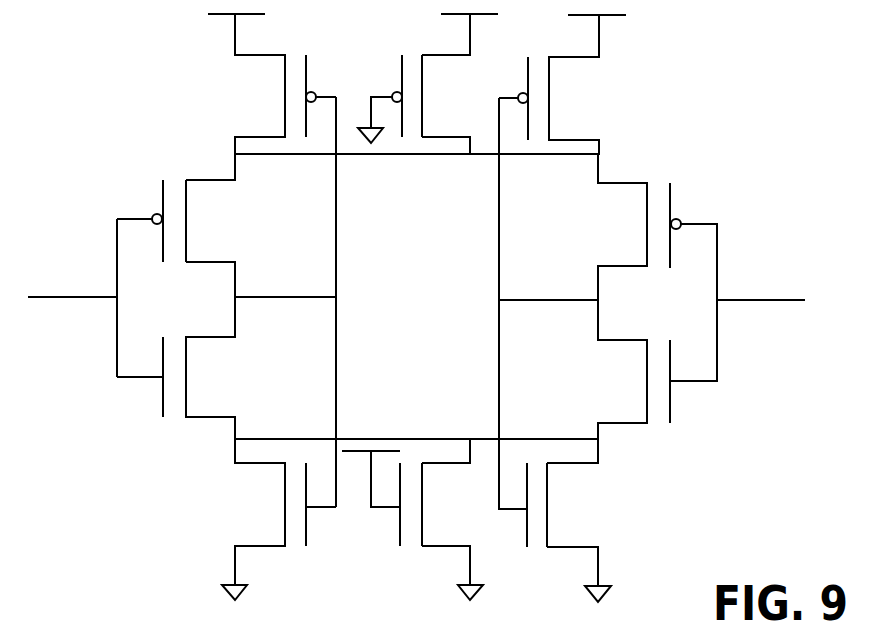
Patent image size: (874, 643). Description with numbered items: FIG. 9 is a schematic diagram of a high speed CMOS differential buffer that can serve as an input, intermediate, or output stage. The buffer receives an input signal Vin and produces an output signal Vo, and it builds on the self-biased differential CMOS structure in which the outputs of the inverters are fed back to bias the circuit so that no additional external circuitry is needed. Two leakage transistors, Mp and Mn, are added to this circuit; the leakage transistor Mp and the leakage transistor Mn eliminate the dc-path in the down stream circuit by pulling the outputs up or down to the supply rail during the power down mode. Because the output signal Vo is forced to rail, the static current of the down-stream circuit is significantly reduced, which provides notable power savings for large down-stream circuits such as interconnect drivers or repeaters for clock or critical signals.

The leakage transistor Mp is at (428, 84).
The leakage transistor Mn is at (412, 519).
The input signal Vin is at (66, 280).
The output signal Vo is at (548, 303).